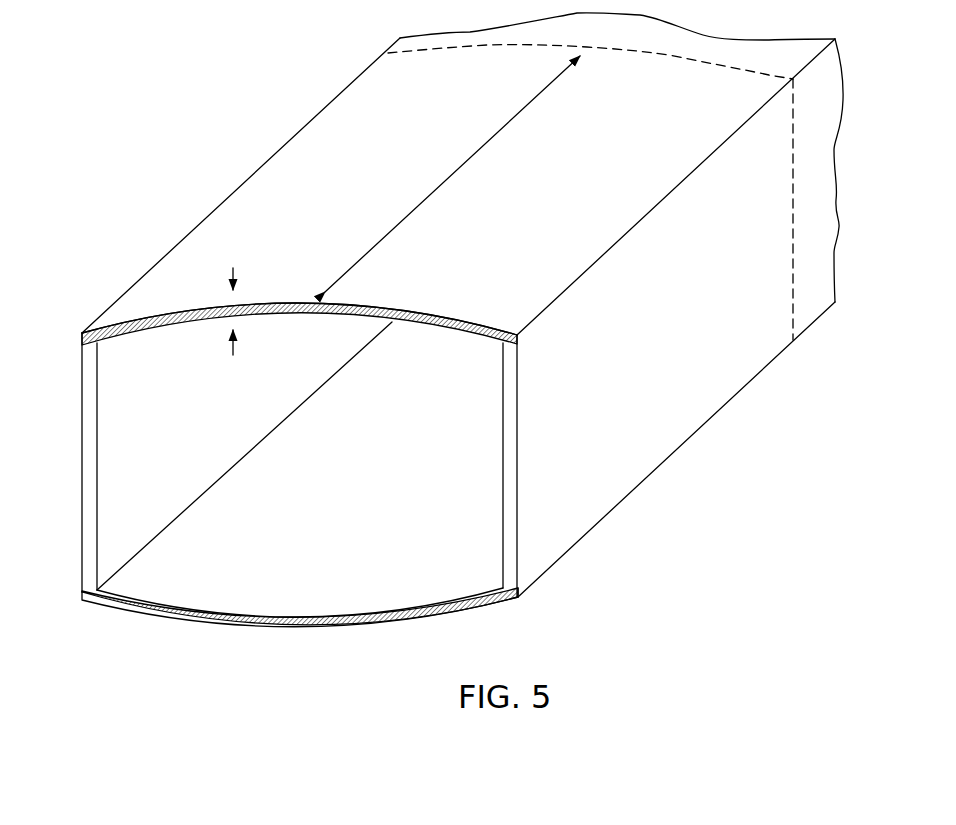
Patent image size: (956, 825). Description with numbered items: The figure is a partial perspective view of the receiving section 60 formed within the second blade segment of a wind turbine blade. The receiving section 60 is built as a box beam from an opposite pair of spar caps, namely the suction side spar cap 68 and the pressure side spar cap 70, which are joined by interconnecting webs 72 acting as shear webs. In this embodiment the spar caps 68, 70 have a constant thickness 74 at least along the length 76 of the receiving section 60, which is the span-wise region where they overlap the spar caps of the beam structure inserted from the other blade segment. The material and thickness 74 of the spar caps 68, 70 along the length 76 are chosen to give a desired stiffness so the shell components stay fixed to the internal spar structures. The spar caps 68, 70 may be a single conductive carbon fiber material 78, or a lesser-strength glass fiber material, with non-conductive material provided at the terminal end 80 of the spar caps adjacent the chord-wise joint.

The receiving section 60 is at (198, 81).
The spar cap 68 is at (347, 600).
The spar cap 70 is at (325, 108).
The interconnecting web 72 is at (80, 445).
The thickness 74 is at (233, 272).
The length 76 is at (483, 147).
The first material 78 is at (412, 318).
The terminal end 80 is at (133, 318).